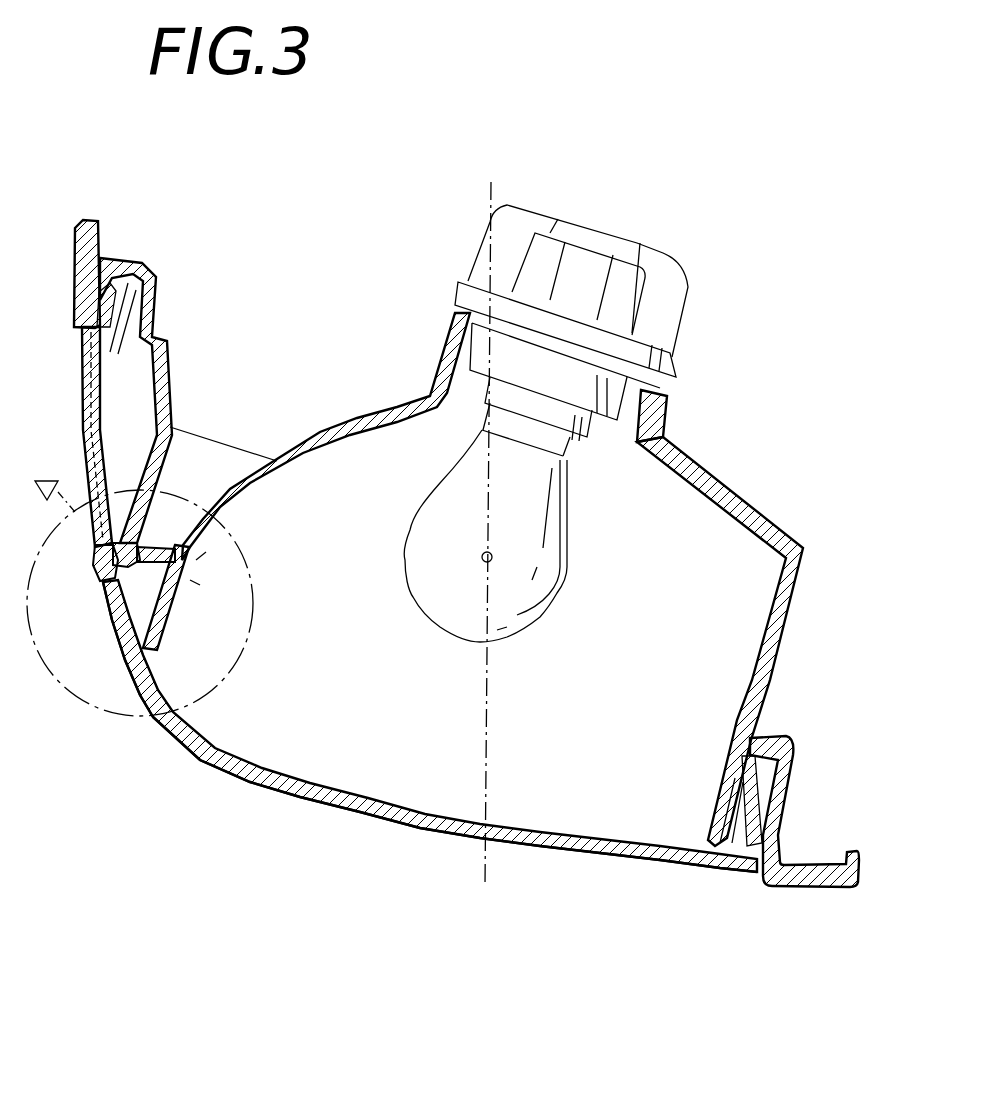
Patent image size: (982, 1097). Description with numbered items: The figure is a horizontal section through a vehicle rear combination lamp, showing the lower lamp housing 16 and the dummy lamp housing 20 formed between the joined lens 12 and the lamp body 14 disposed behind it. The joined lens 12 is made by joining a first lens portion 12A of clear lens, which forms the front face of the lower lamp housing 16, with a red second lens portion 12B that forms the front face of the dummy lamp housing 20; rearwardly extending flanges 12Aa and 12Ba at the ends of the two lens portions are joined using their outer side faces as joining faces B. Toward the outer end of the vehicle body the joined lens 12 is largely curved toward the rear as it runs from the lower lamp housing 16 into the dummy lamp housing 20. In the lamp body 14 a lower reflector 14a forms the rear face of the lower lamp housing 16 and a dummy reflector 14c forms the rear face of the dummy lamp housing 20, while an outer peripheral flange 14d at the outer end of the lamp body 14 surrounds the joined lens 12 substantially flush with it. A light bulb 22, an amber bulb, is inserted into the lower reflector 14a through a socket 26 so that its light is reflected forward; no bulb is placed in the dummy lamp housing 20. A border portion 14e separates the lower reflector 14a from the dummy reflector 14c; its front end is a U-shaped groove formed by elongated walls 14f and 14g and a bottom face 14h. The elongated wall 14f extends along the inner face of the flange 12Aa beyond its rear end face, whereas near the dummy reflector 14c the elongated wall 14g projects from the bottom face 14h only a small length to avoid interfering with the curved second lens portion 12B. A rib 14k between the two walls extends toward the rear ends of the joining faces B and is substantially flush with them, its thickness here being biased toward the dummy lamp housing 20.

The joined lens 12 is at (280, 796).
The first lens portion 12A is at (378, 822).
The flange of first lens portion 12Aa is at (240, 673).
The second lens portion 12B is at (82, 428).
The flange of second lens portion 12Ba is at (120, 613).
The lamp body 14 is at (754, 490).
The lower reflector 14a is at (352, 418).
The dummy reflector 14c is at (171, 357).
The outer peripheral flange 14d is at (78, 243).
The border portion 14e is at (207, 556).
The elongated wall 14f is at (165, 618).
The elongated wall 14g is at (110, 588).
The bottom face 14h is at (160, 543).
The rib 14k is at (203, 578).
The lower lamp housing 16 is at (457, 714).
The dummy lamp housing 20 is at (145, 414).
The light bulb 22 is at (560, 600).
The socket 26 is at (520, 218).
The joining faces B is at (118, 630).